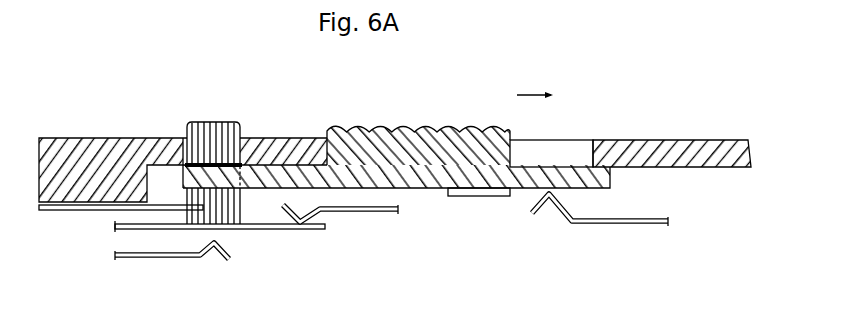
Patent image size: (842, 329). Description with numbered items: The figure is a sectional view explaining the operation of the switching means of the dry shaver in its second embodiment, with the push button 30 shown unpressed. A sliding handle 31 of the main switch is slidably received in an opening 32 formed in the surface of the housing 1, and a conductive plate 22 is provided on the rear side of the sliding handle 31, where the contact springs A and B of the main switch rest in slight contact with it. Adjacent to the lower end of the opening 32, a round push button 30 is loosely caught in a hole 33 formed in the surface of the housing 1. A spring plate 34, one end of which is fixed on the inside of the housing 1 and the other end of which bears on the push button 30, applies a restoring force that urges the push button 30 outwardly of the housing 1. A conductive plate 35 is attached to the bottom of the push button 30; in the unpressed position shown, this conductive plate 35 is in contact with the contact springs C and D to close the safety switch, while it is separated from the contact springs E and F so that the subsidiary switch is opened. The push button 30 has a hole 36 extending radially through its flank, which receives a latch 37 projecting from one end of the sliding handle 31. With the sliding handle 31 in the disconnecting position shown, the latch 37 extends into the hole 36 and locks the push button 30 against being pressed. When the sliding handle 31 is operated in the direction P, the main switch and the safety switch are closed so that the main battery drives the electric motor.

The housing 1 is at (672, 148).
The conductive plate 22 is at (480, 197).
The push button 30 is at (212, 122).
The sliding handle 31 is at (399, 130).
The opening 32 is at (570, 150).
The hole 33 is at (241, 147).
The spring plate 34 is at (146, 206).
The conductive plate 35 is at (237, 230).
The hole 36 is at (197, 161).
The latch 37 is at (261, 178).
The direction of operation P is at (537, 81).